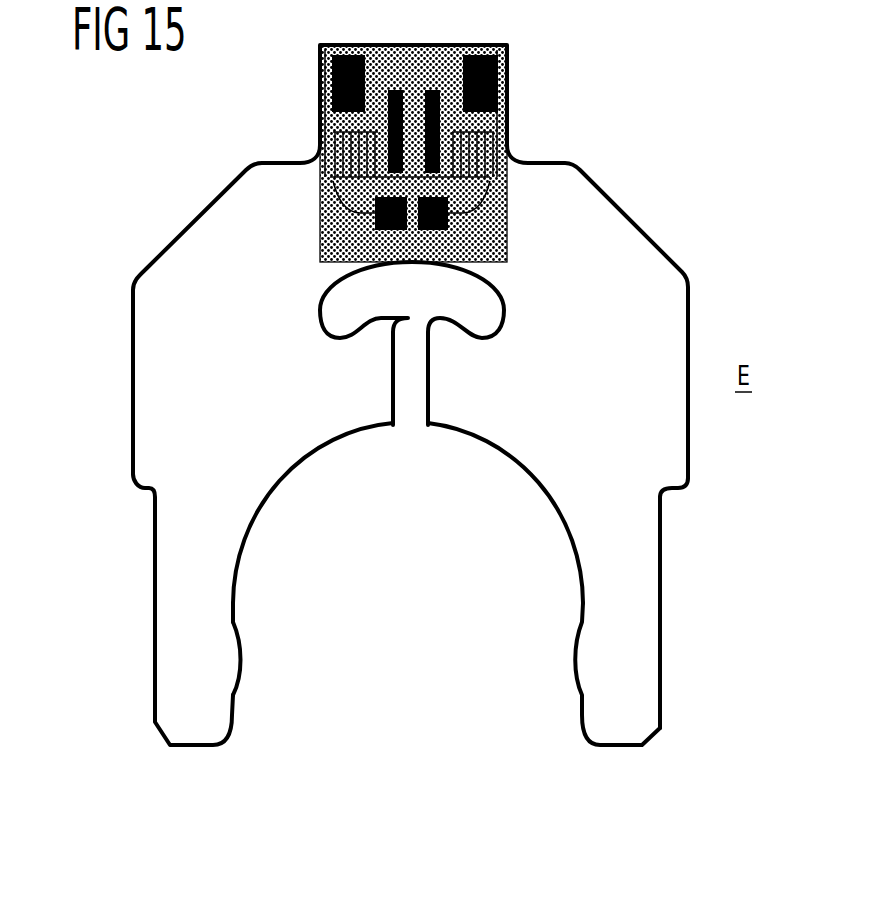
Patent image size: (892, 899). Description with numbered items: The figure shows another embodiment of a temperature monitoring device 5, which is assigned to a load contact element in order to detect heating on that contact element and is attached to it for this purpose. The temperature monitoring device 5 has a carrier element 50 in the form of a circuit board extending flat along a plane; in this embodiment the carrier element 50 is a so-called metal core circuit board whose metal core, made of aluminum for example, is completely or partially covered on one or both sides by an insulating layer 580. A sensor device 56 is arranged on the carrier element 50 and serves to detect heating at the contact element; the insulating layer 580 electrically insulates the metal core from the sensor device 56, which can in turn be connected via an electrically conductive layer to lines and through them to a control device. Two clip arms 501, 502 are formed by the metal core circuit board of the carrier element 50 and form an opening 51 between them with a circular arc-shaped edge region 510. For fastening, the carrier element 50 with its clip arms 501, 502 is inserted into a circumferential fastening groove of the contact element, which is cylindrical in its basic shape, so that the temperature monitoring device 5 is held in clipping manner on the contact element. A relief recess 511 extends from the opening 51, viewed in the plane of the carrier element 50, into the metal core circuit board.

The temperature monitoring device 5 is at (395, 462).
The carrier element 50 is at (657, 611).
The clip arm 501 is at (688, 612).
The clip arm 502 is at (184, 609).
The opening 51 is at (408, 619).
The edge region 510 is at (275, 671).
The relief recess 511 is at (412, 392).
The sensor device 56 is at (361, 131).
The insulating layer 580 is at (452, 153).